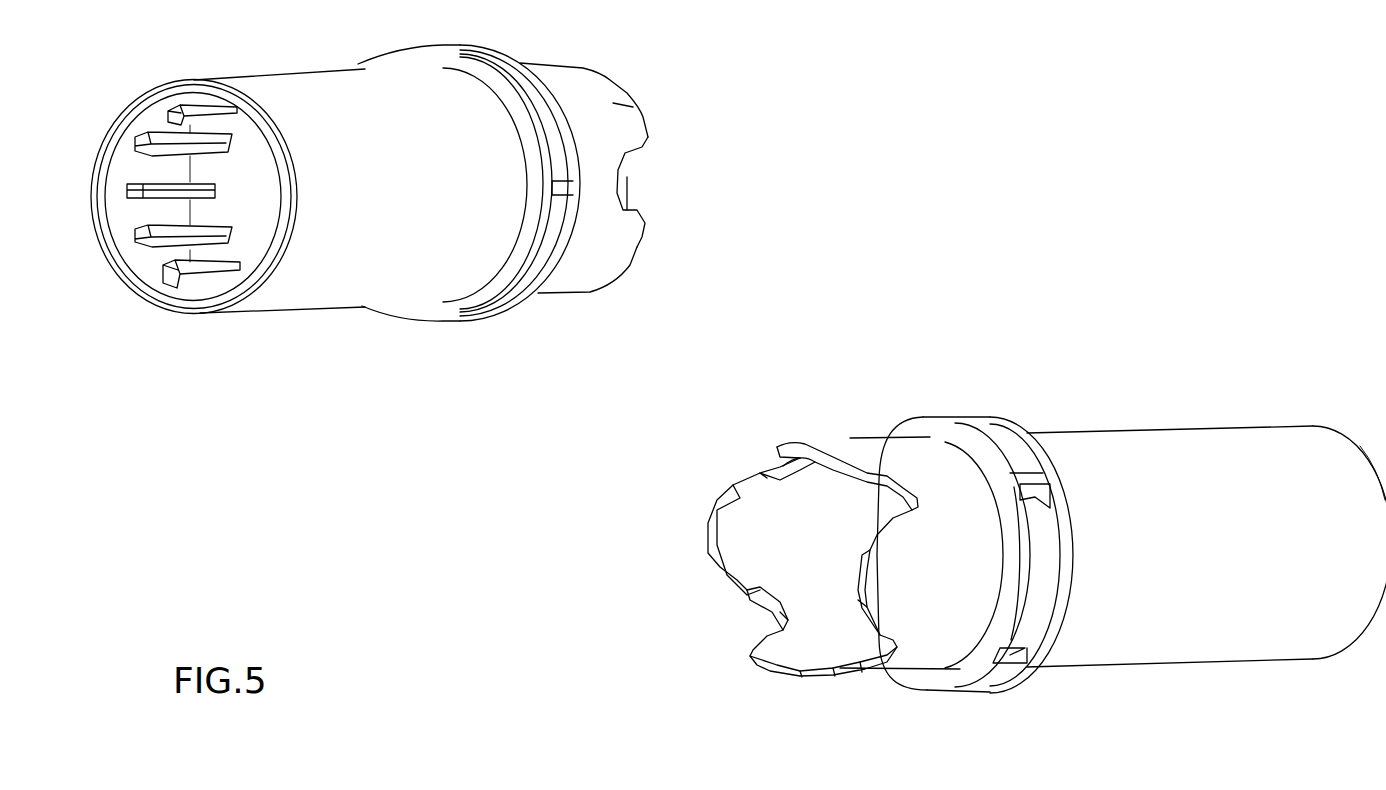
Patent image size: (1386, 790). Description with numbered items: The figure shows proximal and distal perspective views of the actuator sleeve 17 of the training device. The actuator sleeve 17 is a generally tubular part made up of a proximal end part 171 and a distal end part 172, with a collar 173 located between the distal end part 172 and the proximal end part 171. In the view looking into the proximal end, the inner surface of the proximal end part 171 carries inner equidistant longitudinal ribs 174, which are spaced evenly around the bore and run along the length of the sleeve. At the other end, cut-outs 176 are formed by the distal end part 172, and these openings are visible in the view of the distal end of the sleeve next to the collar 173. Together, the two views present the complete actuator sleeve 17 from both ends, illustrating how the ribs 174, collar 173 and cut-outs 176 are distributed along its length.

The actuator sleeve 17 is at (424, 214).
The proximal end part 171 is at (110, 260).
The distal end part 172 is at (850, 438).
The collar 173 is at (540, 80).
The inner equidistant longitudinal ribs 174 is at (187, 273).
The cut-outs 176 is at (773, 464).